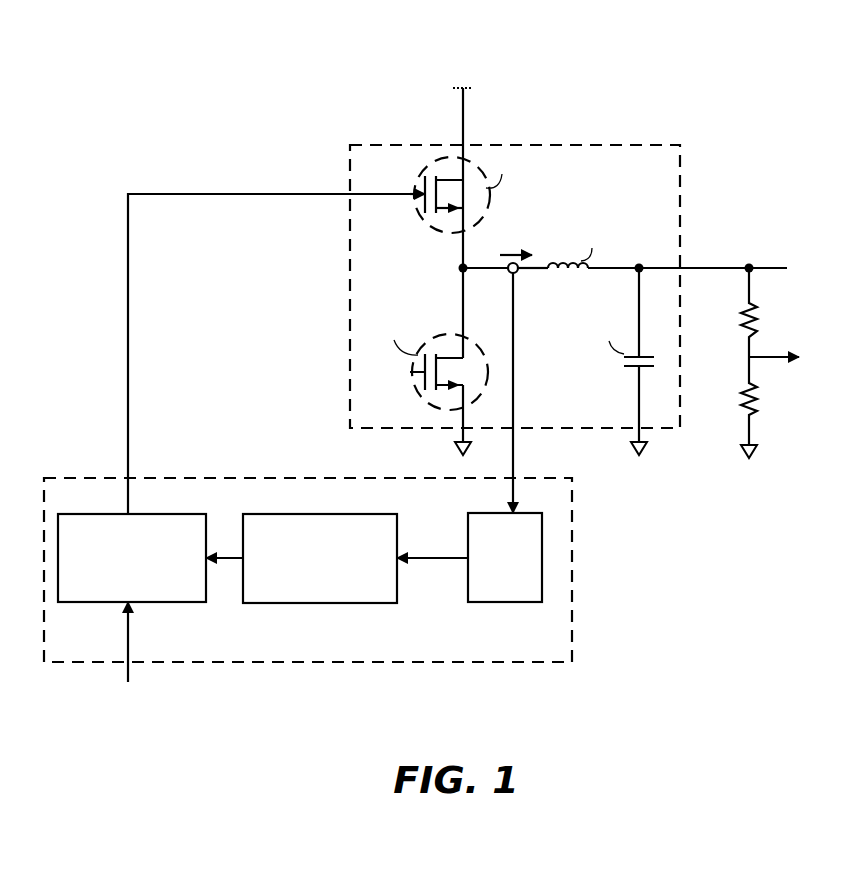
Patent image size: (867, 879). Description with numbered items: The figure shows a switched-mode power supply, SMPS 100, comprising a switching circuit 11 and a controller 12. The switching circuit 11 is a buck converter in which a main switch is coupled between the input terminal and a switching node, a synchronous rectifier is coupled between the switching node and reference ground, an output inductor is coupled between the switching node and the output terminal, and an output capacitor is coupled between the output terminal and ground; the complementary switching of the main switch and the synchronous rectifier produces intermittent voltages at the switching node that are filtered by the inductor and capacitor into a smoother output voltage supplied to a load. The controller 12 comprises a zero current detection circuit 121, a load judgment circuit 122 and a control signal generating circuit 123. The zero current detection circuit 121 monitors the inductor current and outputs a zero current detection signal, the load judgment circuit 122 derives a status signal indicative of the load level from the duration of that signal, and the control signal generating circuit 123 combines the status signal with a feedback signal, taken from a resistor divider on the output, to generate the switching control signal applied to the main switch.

The SMPS 100 is at (732, 76).
The switching circuit 11 is at (680, 188).
The controller 12 is at (572, 602).
The zero current detection circuit 121 is at (495, 603).
The load judgment circuit 122 is at (334, 604).
The control signal generating circuit 123 is at (185, 603).